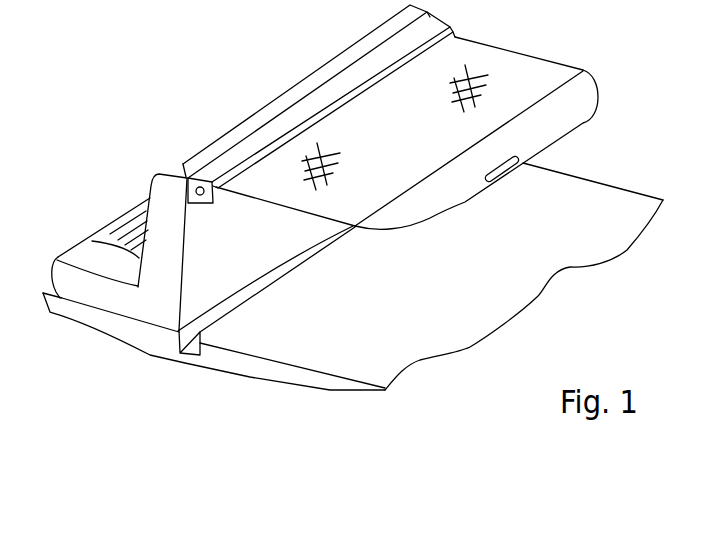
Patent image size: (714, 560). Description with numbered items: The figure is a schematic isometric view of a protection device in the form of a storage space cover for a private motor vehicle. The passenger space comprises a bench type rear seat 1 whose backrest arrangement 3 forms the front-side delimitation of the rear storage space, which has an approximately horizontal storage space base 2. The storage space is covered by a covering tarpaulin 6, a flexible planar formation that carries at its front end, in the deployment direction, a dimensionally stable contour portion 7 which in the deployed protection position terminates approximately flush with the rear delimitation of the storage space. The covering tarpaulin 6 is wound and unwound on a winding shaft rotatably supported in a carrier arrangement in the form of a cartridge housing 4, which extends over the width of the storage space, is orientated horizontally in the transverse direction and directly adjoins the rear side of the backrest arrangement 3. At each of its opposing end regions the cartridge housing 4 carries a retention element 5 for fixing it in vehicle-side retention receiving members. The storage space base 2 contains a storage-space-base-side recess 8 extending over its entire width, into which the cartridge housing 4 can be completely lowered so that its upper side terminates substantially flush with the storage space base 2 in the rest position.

The bench type rear seat 1 is at (98, 186).
The storage space base 2 is at (375, 366).
The backrest arrangement 3 is at (197, 262).
The cartridge housing 4 is at (268, 135).
The retention element 5 is at (200, 187).
The covering tarpaulin 6 is at (282, 191).
The contour portion 7 is at (431, 213).
The storage-space-base-side recess 8 is at (241, 312).